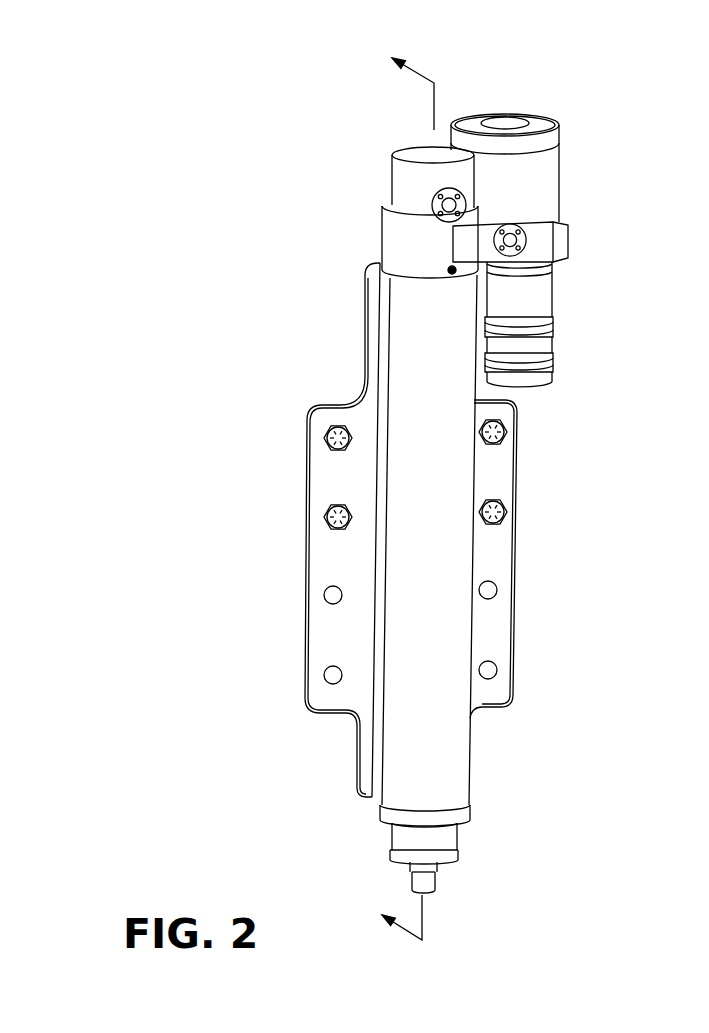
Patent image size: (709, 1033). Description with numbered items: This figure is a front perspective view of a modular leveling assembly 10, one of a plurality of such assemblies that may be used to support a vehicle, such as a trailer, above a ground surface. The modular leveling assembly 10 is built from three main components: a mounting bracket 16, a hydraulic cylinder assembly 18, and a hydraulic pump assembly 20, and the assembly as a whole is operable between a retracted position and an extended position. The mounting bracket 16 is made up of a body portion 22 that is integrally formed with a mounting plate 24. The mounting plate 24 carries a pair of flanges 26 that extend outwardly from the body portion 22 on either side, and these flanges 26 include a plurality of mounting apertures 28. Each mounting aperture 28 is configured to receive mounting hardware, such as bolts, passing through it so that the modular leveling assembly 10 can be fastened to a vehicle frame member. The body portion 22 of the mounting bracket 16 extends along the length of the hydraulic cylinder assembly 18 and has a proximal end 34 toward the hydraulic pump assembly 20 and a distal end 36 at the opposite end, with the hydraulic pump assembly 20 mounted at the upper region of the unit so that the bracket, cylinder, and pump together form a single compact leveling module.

The modular leveling assembly 10 is at (437, 491).
The mounting bracket 16 is at (425, 530).
The hydraulic cylinder assembly 18 is at (483, 472).
The hydraulic pump assembly 20 is at (567, 187).
The body portion 22 is at (472, 622).
The mounting plate 24 is at (515, 548).
The flanges 26 is at (325, 632).
The mounting apertures 28 is at (500, 582).
The proximal end 34 is at (388, 376).
The distal end 36 is at (455, 750).